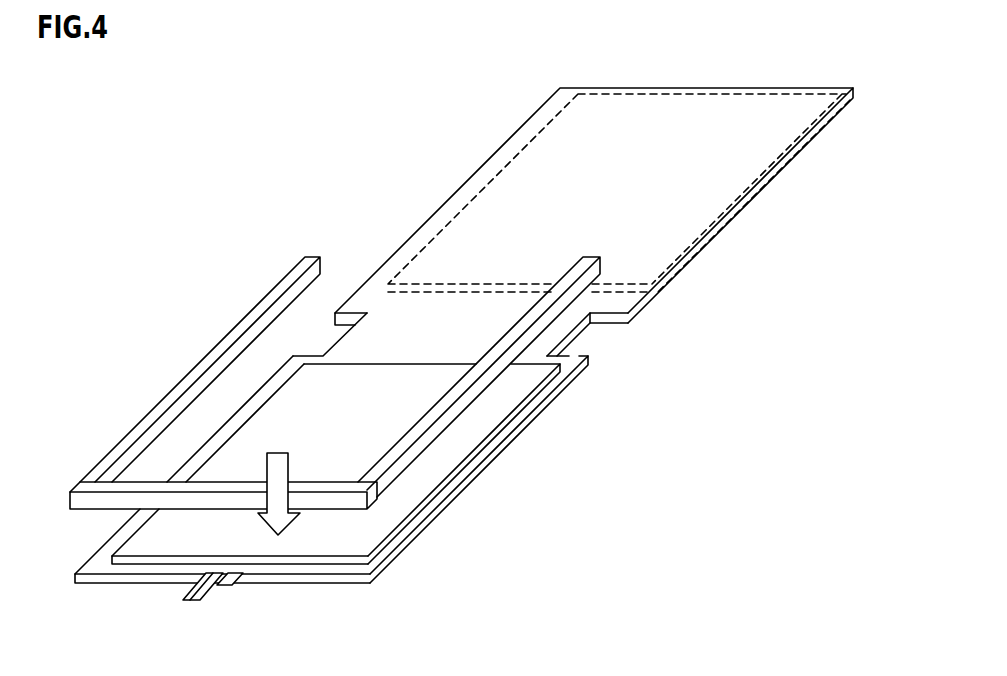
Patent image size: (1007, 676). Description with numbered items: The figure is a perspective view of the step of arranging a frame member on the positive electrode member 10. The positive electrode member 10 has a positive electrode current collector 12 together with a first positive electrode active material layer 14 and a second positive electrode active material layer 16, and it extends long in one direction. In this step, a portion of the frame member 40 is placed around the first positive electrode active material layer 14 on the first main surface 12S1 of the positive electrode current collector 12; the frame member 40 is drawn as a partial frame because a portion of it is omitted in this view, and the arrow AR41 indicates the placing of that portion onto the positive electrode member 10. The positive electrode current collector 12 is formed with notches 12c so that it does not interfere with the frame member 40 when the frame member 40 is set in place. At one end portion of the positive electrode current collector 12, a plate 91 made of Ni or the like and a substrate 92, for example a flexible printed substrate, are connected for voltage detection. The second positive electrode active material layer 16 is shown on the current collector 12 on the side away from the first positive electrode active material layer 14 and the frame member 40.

The positive electrode member 10 is at (519, 117).
The positive electrode current collector 12 is at (435, 508).
The notch 12c is at (583, 337).
The first main surface 12S1 is at (388, 327).
The first positive electrode active material layer 14 is at (447, 452).
The second positive electrode active material layer 16 is at (682, 200).
The frame member 40 is at (227, 342).
The plate 91 is at (228, 586).
The substrate 92 is at (187, 600).
The direction arrow AR41 is at (287, 518).